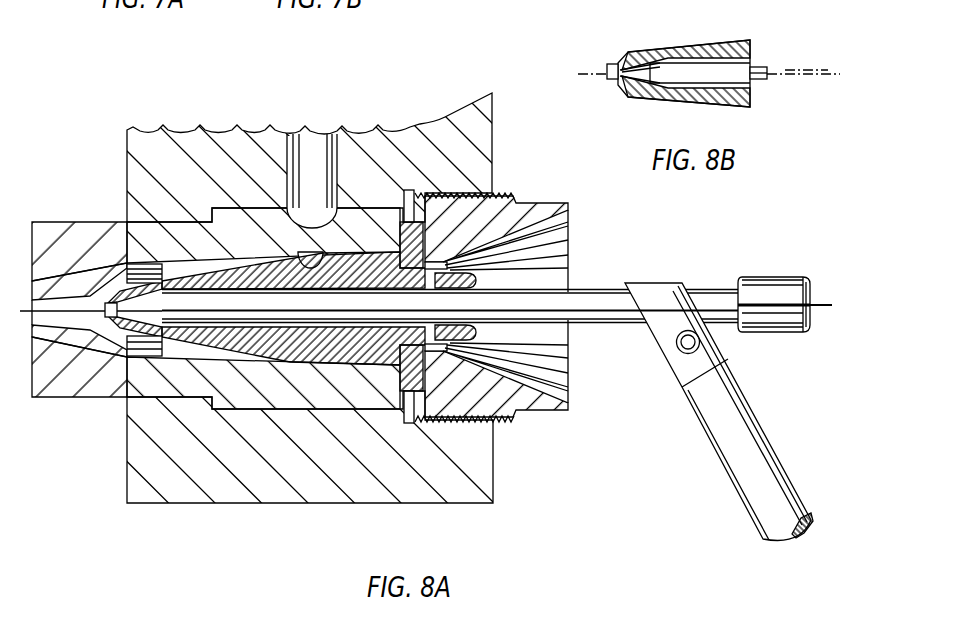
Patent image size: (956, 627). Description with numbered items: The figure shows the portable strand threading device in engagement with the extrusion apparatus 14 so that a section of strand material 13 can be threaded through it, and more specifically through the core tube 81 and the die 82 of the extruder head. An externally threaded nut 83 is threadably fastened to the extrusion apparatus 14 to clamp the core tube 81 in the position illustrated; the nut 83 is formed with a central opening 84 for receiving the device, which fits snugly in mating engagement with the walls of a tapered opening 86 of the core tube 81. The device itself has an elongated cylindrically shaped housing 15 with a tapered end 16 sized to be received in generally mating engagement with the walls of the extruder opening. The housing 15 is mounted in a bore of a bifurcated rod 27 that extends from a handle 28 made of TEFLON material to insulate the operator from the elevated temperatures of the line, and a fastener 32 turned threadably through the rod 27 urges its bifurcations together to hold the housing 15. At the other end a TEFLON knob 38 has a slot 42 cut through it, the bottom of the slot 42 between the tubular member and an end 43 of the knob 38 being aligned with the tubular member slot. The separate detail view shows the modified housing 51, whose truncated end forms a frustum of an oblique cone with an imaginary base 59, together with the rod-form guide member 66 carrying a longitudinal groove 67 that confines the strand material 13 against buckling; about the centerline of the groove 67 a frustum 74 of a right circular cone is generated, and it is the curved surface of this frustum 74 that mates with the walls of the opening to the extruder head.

In FIG. 8A, the strand material 13 is at (93, 292).
In FIG. 8A, the extrusion apparatus 14 is at (168, 525).
In FIG. 8A, the housing 15 is at (595, 291).
In FIG. 8A, the tapered end 16 is at (133, 318).
In FIG. 8A, the bifurcated rod 27 is at (681, 367).
In FIG. 8A, the handle 28 is at (725, 447).
In FIG. 8A, the fastener 32 is at (677, 344).
In FIG. 8A, the knob 38 is at (792, 328).
In FIG. 8A, the slot 42 is at (767, 303).
In FIG. 8A, the end 43 is at (815, 290).
In FIG. 8B, the housing 51 is at (733, 58).
In FIG. 8B, the imaginary base 59 is at (650, 68).
In FIG. 8B, the guide member 66 is at (768, 66).
In FIG. 8B, the slot 67 is at (768, 79).
In FIG. 8B, the frustum 74 is at (630, 70).
In FIG. 8A, the core tube 81 is at (140, 332).
In FIG. 8B, the core tube 81 is at (627, 95).
In FIG. 8A, the die 82 is at (57, 342).
In FIG. 8A, the nut 83 is at (537, 407).
In FIG. 8A, the central opening 84 is at (490, 352).
In FIG. 8A, the tapered opening 86 is at (167, 296).